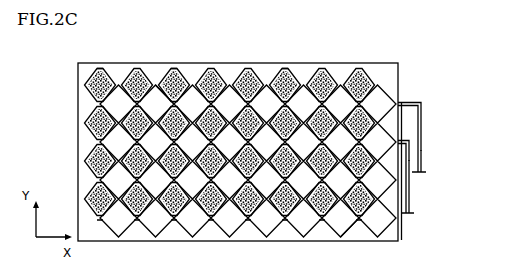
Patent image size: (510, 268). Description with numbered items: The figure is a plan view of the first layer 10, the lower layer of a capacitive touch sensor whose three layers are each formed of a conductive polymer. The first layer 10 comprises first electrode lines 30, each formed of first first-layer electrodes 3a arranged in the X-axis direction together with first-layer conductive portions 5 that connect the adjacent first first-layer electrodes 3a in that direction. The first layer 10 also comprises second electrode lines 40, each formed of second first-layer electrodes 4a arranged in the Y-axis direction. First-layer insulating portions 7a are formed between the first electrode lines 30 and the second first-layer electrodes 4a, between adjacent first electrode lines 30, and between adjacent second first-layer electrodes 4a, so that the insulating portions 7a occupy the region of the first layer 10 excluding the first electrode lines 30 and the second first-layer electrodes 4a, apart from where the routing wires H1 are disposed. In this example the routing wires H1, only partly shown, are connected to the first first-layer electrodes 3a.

The first layer 10 is at (399, 77).
The first first-layer electrode 3a is at (227, 107).
The second first-layer electrode 4a is at (357, 71).
The first-layer conductive portion 5 is at (249, 98).
The first-layer insulating portion 7a is at (154, 82).
The second electrode line 40 is at (100, 66).
The first electrode line 30 is at (391, 93).
The routing wire H1 is at (409, 160).